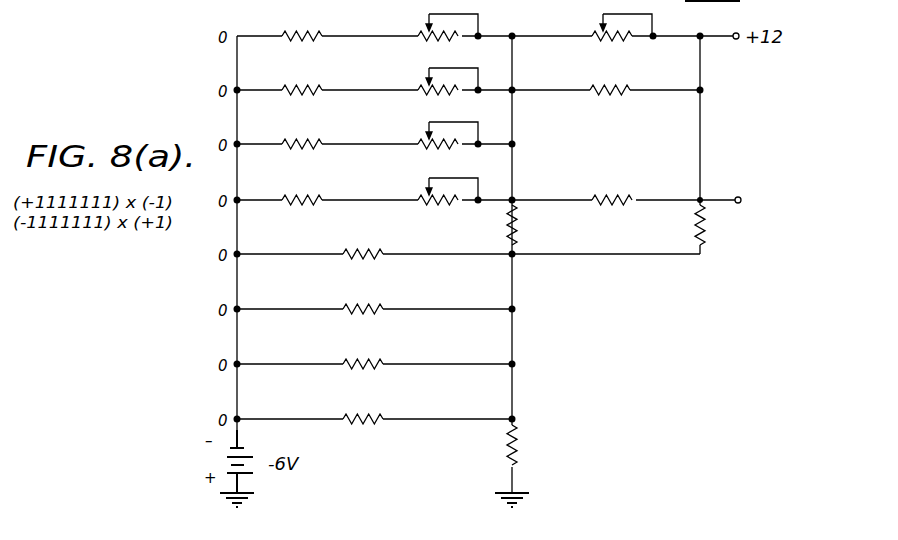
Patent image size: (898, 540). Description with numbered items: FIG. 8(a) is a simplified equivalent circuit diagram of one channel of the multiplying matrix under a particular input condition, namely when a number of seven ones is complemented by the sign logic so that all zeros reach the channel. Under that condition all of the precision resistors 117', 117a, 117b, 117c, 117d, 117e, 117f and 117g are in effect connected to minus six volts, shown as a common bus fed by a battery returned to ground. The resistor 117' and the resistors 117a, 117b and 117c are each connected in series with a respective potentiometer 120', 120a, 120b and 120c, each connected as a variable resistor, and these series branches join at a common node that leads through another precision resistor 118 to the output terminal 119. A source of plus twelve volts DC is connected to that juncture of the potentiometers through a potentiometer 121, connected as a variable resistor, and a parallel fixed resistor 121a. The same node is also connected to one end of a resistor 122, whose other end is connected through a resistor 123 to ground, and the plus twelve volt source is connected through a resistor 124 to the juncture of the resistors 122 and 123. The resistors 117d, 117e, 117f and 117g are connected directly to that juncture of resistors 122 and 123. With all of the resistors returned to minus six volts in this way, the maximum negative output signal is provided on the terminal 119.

The precision resistor 117' is at (289, 23).
The precision resistor 117a is at (297, 87).
The precision resistor 117b is at (297, 141).
The precision resistor 117c is at (297, 197).
The precision resistor 117d is at (357, 252).
The precision resistor 117e is at (366, 307).
The precision resistor 117f is at (369, 362).
The precision resistor 117g is at (367, 417).
The potentiometer 120' is at (421, 24).
The potentiometer 120a is at (422, 90).
The potentiometer 120b is at (422, 144).
The potentiometer 120c is at (422, 200).
The potentiometer 121 is at (595, 36).
The fixed resistor 121a is at (594, 89).
The precision resistor 118 is at (604, 200).
The output terminal 119 is at (757, 202).
The resistor 122 is at (515, 247).
The resistor 123 is at (516, 467).
The resistor 124 is at (696, 230).